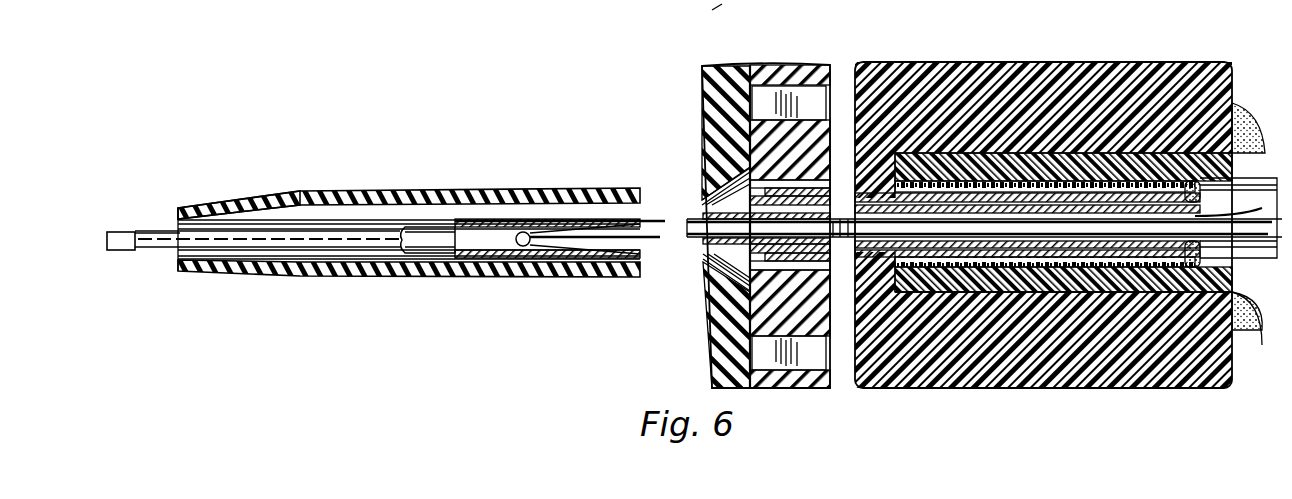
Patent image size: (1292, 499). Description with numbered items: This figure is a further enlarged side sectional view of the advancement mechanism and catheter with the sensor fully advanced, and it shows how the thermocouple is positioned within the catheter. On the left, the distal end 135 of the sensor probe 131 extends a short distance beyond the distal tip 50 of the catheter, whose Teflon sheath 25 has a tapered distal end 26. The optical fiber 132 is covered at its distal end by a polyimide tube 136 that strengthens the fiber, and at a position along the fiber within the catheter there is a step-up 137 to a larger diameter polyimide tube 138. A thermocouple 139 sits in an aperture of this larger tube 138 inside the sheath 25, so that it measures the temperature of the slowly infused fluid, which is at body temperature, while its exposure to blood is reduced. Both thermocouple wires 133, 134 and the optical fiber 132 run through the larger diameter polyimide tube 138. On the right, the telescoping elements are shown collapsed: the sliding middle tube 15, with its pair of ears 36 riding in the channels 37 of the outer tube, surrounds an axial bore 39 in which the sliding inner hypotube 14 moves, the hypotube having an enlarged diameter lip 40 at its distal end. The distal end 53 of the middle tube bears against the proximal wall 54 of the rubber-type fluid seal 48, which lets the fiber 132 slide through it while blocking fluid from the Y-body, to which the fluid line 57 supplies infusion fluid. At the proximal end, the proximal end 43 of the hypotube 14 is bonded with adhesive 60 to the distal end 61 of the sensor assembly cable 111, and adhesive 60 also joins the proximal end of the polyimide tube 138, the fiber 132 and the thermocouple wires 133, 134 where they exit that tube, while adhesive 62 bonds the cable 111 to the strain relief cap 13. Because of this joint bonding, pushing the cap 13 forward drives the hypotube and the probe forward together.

The cap 13 is at (940, 62).
The sliding inner hypotube 14 is at (841, 92).
The sliding middle tube 15 is at (808, 192).
The Teflon sheath 25 is at (368, 178).
The tapered distal end 26 is at (252, 198).
The ears 36 is at (789, 92).
The channels 37 is at (808, 82).
The axial bore 39 is at (773, 263).
The enlarged diameter lip 40 is at (703, 186).
The proximal end of the hypotube 43 is at (948, 268).
The fluid seal 48 is at (702, 146).
The distal tip of the catheter 50 is at (178, 212).
The distal end of the middle tube 53 is at (702, 110).
The proximal wall of the seal 54 is at (752, 72).
The fluid line 57 is at (705, 8).
The adhesive 60 is at (992, 262).
The distal end of the sensor assembly cable 61 is at (1052, 292).
The adhesive 62 is at (1247, 328).
The sensor assembly cable 111 is at (977, 190).
The sensor probe 131 is at (128, 230).
The optical fiber 132 is at (246, 258).
The thermocouple wire 133 is at (654, 212).
The thermocouple wire 134 is at (658, 243).
The distal end of the probe 135 is at (110, 234).
The polyimide tube 136 is at (153, 252).
The step-up 137 is at (381, 260).
The larger diameter polyimide tube 138 is at (436, 260).
The thermocouple 139 is at (528, 248).